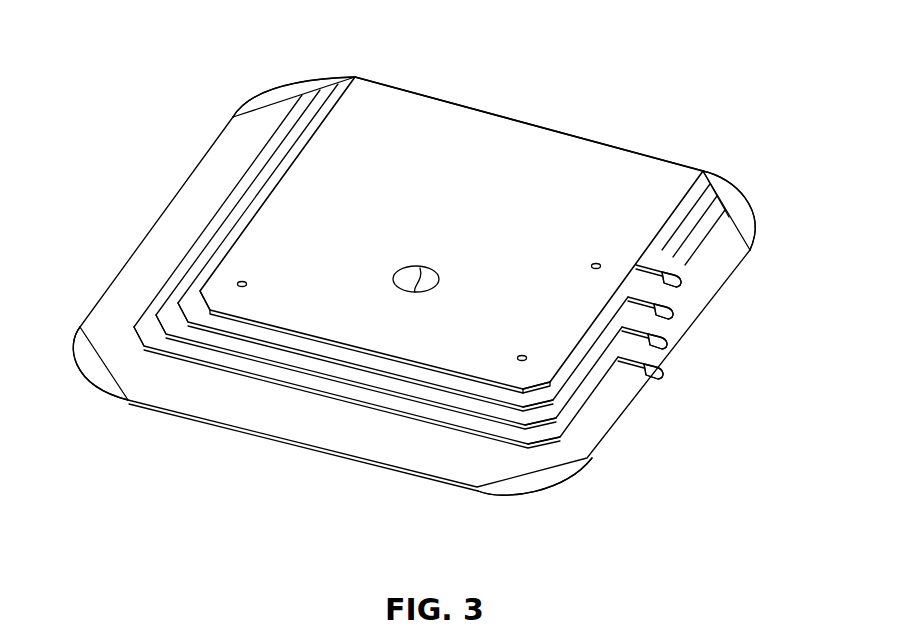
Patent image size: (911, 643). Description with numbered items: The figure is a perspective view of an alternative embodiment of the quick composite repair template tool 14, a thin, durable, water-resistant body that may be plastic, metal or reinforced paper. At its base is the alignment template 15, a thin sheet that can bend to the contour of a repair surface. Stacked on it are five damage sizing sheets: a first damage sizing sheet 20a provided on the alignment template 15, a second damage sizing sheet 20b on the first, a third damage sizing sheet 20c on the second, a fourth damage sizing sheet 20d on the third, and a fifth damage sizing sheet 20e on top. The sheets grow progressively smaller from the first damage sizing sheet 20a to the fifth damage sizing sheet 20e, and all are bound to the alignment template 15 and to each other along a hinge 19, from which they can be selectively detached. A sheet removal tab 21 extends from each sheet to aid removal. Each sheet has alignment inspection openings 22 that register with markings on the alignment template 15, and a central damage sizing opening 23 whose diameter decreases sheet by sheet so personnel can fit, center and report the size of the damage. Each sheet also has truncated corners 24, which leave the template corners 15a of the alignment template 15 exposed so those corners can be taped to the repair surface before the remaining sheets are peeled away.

The quick composite repair template tool 14 is at (468, 85).
The alignment template 15 is at (488, 503).
The template corners 15a is at (289, 95).
The hinge 19 is at (673, 163).
The first damage sizing sheet 20a is at (585, 469).
The second damage sizing sheet 20b is at (298, 393).
The third damage sizing sheet 20c is at (358, 390).
The fourth damage sizing sheet 20d is at (431, 390).
The fifth damage sizing sheet 20e is at (488, 387).
The sheet removal tab 21 is at (680, 278).
The alignment inspection openings 22 is at (242, 281).
The damage sizing opening 23 is at (420, 268).
The truncated corners 24 is at (200, 291).